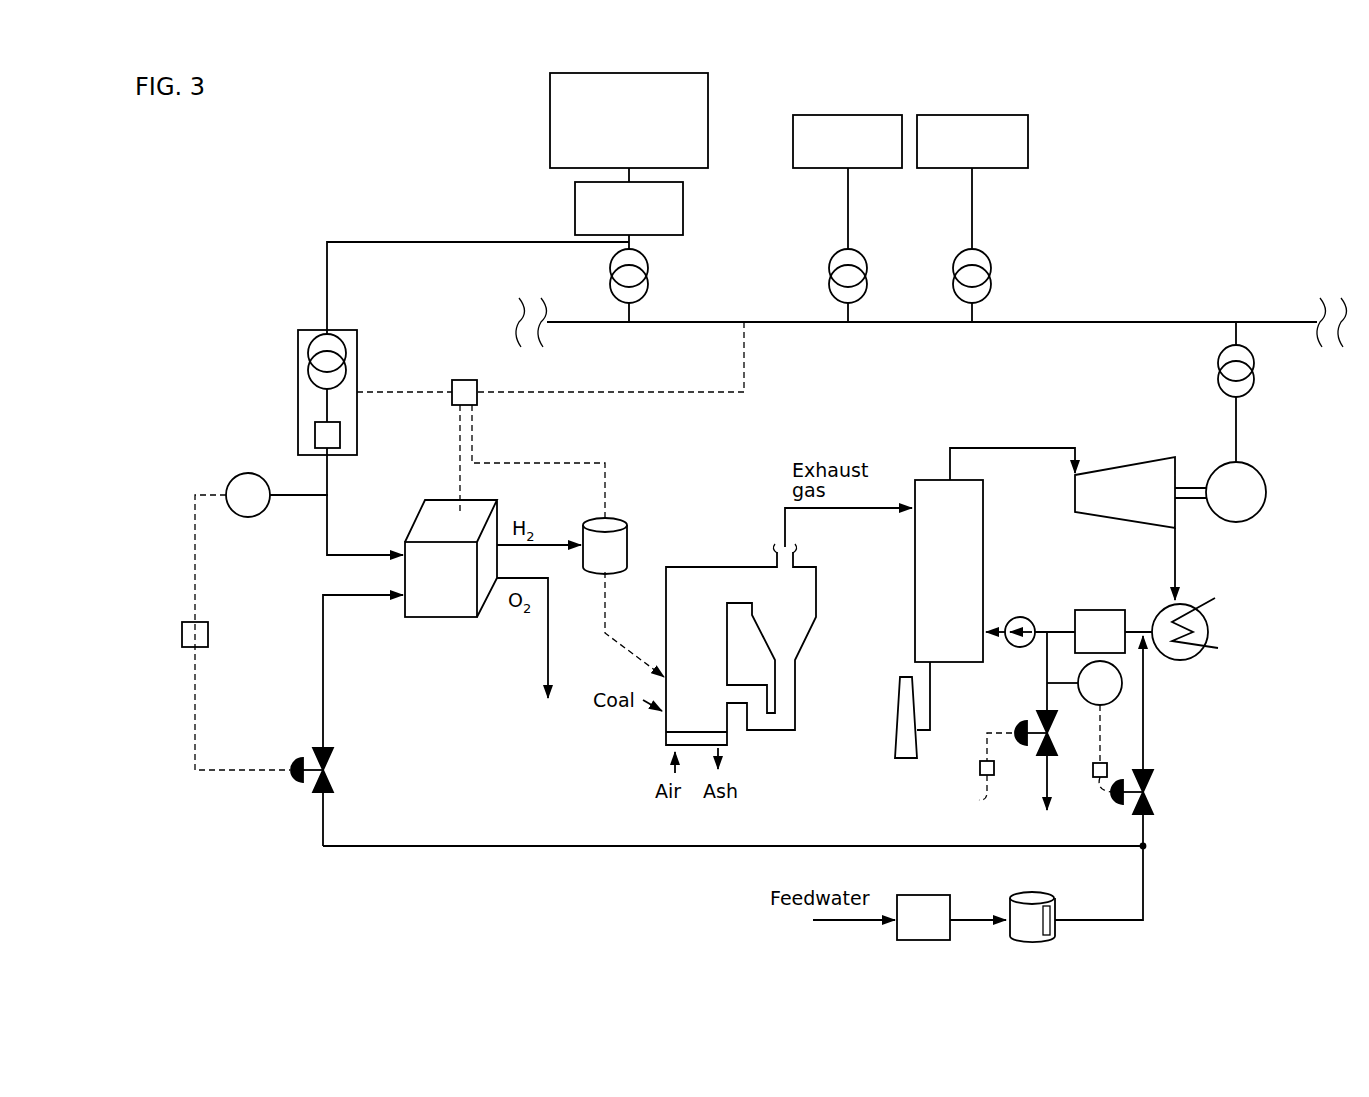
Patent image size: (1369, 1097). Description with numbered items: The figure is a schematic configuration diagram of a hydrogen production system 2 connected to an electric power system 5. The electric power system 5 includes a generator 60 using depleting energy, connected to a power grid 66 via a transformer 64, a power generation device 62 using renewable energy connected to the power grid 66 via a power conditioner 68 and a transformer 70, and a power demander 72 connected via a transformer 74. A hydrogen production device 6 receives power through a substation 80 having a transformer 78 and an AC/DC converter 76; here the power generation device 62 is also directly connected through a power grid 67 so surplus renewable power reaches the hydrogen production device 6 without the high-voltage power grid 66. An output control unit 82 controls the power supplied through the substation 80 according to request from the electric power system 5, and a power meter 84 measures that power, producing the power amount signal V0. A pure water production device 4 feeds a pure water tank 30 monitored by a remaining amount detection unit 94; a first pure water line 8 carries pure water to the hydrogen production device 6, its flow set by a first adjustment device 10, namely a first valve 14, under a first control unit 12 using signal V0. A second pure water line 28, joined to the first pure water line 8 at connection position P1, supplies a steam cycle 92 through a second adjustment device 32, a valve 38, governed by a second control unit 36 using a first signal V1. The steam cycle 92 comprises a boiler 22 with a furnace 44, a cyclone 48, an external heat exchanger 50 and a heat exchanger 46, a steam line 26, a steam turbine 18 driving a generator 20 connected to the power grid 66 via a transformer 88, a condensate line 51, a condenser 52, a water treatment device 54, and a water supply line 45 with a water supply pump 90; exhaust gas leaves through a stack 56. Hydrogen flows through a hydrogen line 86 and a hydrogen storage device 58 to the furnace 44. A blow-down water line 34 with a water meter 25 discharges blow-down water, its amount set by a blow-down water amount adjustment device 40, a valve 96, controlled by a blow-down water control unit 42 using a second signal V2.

The hydrogen production system 2 is at (183, 408).
The pure water production device 4 is at (925, 895).
The electric power system 5 is at (183, 290).
The hydrogen production device 6 is at (433, 619).
The first pure water line 8 is at (488, 849).
The first adjustment device 10 is at (367, 720).
The first valve 14 is at (332, 756).
The first control unit 12 is at (209, 635).
The steam turbine 18 is at (1128, 464).
The generator 20 is at (1257, 466).
The boiler 22 is at (1011, 571).
The water meter 25 is at (1092, 706).
The steam line 26 is at (1063, 447).
The second pure water line 28 is at (1145, 695).
The pure water tank 30 is at (1064, 912).
The second adjustment device 32 is at (1184, 788).
The valve 38 is at (1152, 781).
The blow-down water line 34 is at (1046, 656).
The second control unit 36 is at (1099, 770).
The blow-down water amount adjustment device 40 is at (997, 722).
The valve 96 is at (1037, 718).
The blow-down water control unit 42 is at (980, 768).
The furnace 44 is at (725, 566).
The water supply line 45 is at (1040, 630).
The heat exchanger 46 is at (985, 544).
The cyclone 48 is at (772, 654).
The external heat exchanger 50 is at (773, 731).
The condensate line 51 is at (1178, 553).
The condenser 52 is at (1195, 603).
The water treatment device 54 is at (1108, 610).
The stack 56 is at (893, 733).
The hydrogen storage device 58 is at (617, 518).
The generator 60 is at (838, 114).
The power generation device 62 is at (549, 130).
The transformer 64 is at (868, 270).
The power grid 66 is at (589, 321).
The power grid 67 is at (433, 242).
The power conditioner 68 is at (684, 230).
The transformer 70 is at (651, 287).
The power demander 72 is at (950, 114).
The transformer 74 is at (992, 270).
The AC/DC converter 76 is at (341, 443).
The transformer 78 is at (343, 347).
The substation 80 is at (355, 440).
The output control unit 82 is at (466, 380).
The power meter 84 is at (248, 472).
The hydrogen line 86 is at (607, 598).
The transformer 88 is at (1217, 361).
The water supply pump 90 is at (1016, 618).
The steam cycle 92 is at (908, 425).
The remaining amount detection unit 94 is at (1050, 938).
The power amount signal V0 is at (197, 562).
The first signal V1 is at (1103, 724).
The second signal V2 is at (985, 792).
The connection position P1 is at (1148, 846).